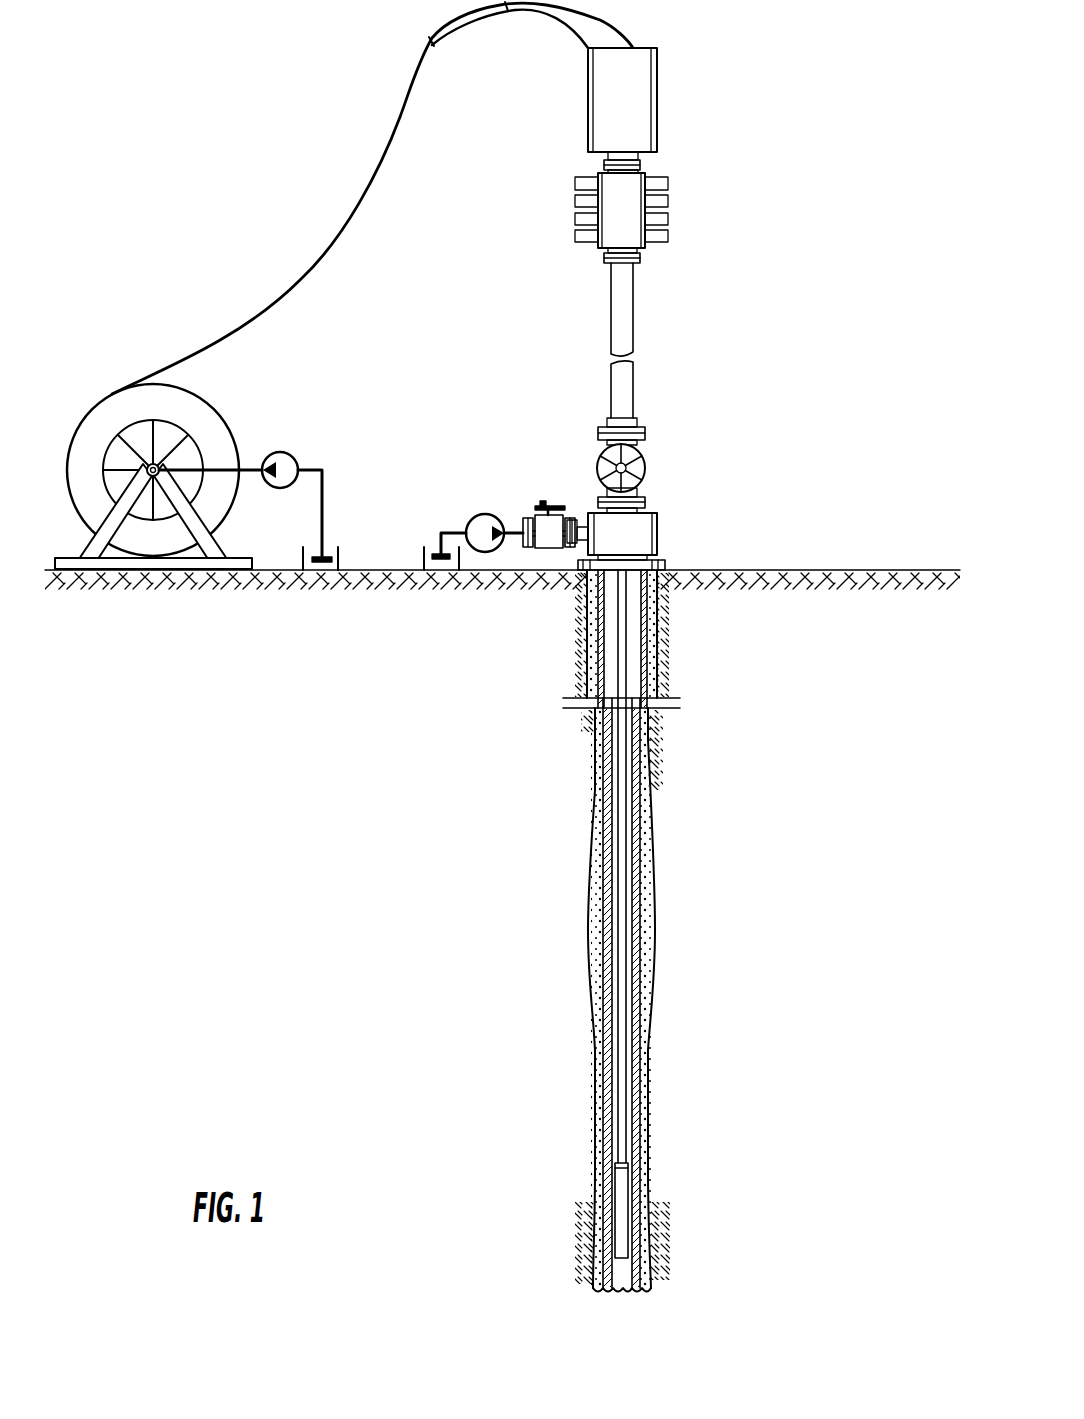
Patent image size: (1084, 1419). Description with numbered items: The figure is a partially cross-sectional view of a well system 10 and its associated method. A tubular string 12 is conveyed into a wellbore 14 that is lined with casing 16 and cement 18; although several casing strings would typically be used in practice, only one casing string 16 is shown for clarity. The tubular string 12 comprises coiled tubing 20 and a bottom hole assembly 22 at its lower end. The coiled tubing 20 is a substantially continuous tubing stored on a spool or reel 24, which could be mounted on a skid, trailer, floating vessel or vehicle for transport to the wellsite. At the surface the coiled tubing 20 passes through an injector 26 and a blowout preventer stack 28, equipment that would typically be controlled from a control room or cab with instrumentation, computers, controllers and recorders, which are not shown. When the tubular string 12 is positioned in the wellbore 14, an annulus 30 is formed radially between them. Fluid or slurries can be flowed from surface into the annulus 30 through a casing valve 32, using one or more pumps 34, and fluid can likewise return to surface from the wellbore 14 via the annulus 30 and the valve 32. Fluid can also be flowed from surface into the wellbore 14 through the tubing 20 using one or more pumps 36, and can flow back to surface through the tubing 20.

The well system 10 is at (792, 459).
The tubular string 12 is at (630, 668).
The wellbore 14 is at (588, 628).
The casing 16 is at (603, 853).
The cement 18 is at (655, 853).
The coiled tubing 20 is at (304, 284).
The bottom hole assembly 22 is at (621, 1268).
The reel 24 is at (218, 410).
The injector 26 is at (586, 93).
The blowout preventer stack 28 is at (575, 217).
The annulus 30 is at (632, 615).
The casing valve 32 is at (558, 503).
The pump 34 is at (483, 514).
The pump 36 is at (298, 452).